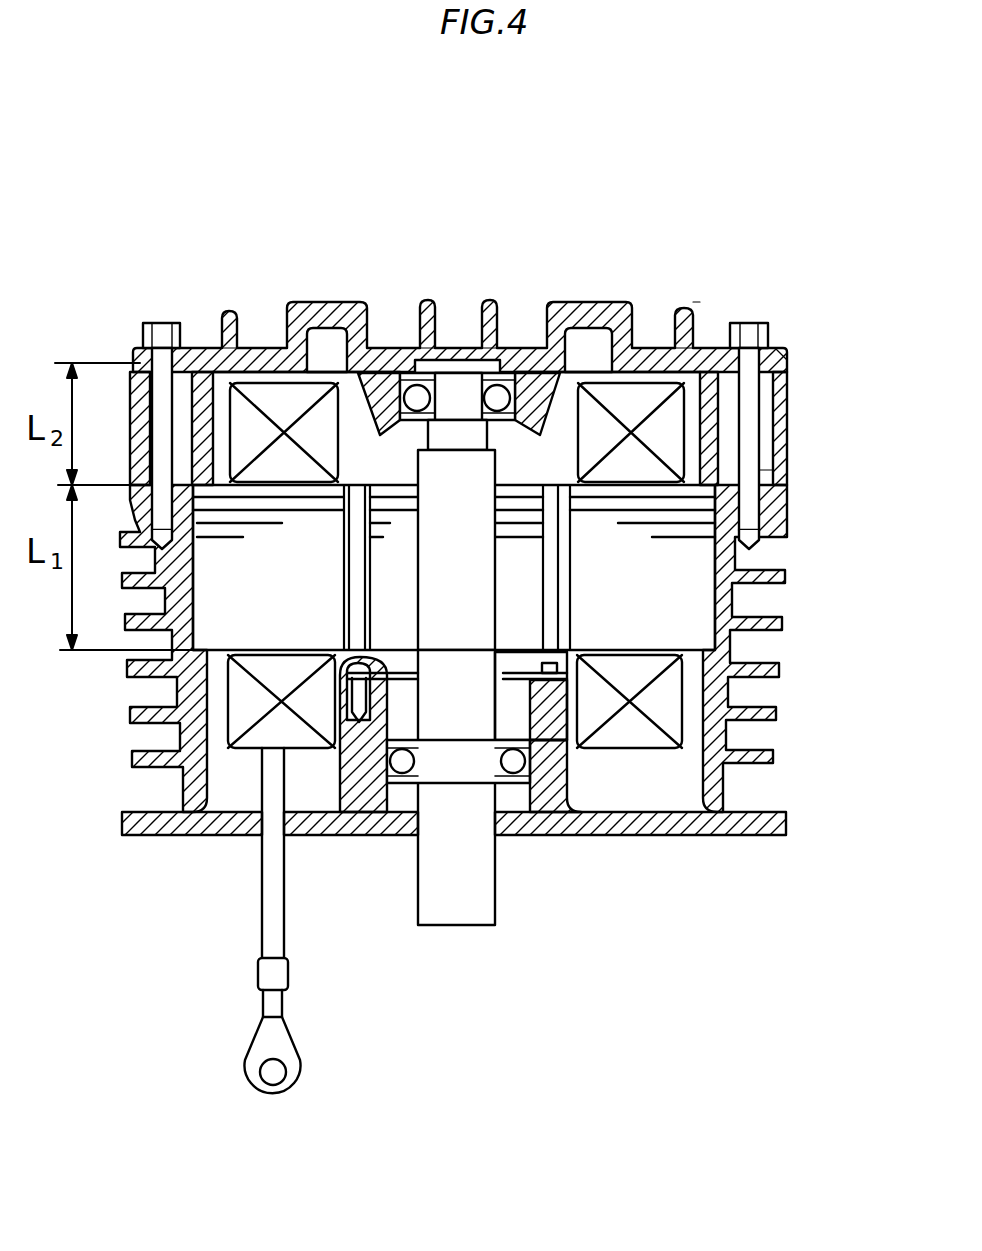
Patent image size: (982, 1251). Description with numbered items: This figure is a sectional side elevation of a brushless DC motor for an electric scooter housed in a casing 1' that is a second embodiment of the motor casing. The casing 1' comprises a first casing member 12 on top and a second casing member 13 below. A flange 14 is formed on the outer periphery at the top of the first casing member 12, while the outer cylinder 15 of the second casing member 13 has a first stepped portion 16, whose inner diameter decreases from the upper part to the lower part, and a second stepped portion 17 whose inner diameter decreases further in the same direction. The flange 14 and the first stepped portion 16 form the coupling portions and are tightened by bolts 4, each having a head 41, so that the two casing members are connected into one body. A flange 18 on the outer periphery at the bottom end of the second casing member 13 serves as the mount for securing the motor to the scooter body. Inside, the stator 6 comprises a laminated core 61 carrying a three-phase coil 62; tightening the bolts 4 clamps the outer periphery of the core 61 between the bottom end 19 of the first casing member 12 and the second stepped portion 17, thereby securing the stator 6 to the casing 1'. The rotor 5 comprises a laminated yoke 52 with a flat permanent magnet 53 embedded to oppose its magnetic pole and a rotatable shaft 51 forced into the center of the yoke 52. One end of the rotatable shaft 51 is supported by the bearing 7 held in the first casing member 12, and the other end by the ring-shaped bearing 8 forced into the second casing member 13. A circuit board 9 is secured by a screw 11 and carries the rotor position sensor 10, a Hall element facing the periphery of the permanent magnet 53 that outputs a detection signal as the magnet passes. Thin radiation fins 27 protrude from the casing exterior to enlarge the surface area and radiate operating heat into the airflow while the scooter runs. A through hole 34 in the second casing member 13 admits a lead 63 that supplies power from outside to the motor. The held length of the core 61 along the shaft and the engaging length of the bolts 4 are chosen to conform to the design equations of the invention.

The casing 1' is at (713, 250).
The bolt 4 is at (160, 345).
The rotor 5 is at (400, 480).
The stator 6 is at (568, 405).
The bearing 7 is at (410, 360).
The bearing 8 is at (403, 786).
The circuit board 9 is at (516, 681).
The rotor position sensor 10 is at (558, 750).
The screw 11 is at (347, 765).
The first casing member 12 is at (598, 318).
The second casing member 13 is at (652, 827).
The flange 14 is at (764, 356).
The outer cylinder 15 is at (162, 688).
The first stepped portion 16 is at (760, 477).
The second stepped portion 17 is at (764, 682).
The flange 18 is at (122, 830).
The bottom end 19 is at (200, 480).
The radiation fins 27 is at (486, 324).
The through hole 34 is at (258, 838).
The head 41 is at (750, 335).
The rotatable shaft 51 is at (458, 915).
The yoke 52 is at (513, 537).
The permanent magnet 53 is at (358, 500).
The core 61 is at (700, 596).
The coil 62 is at (663, 710).
The lead 63 is at (272, 920).